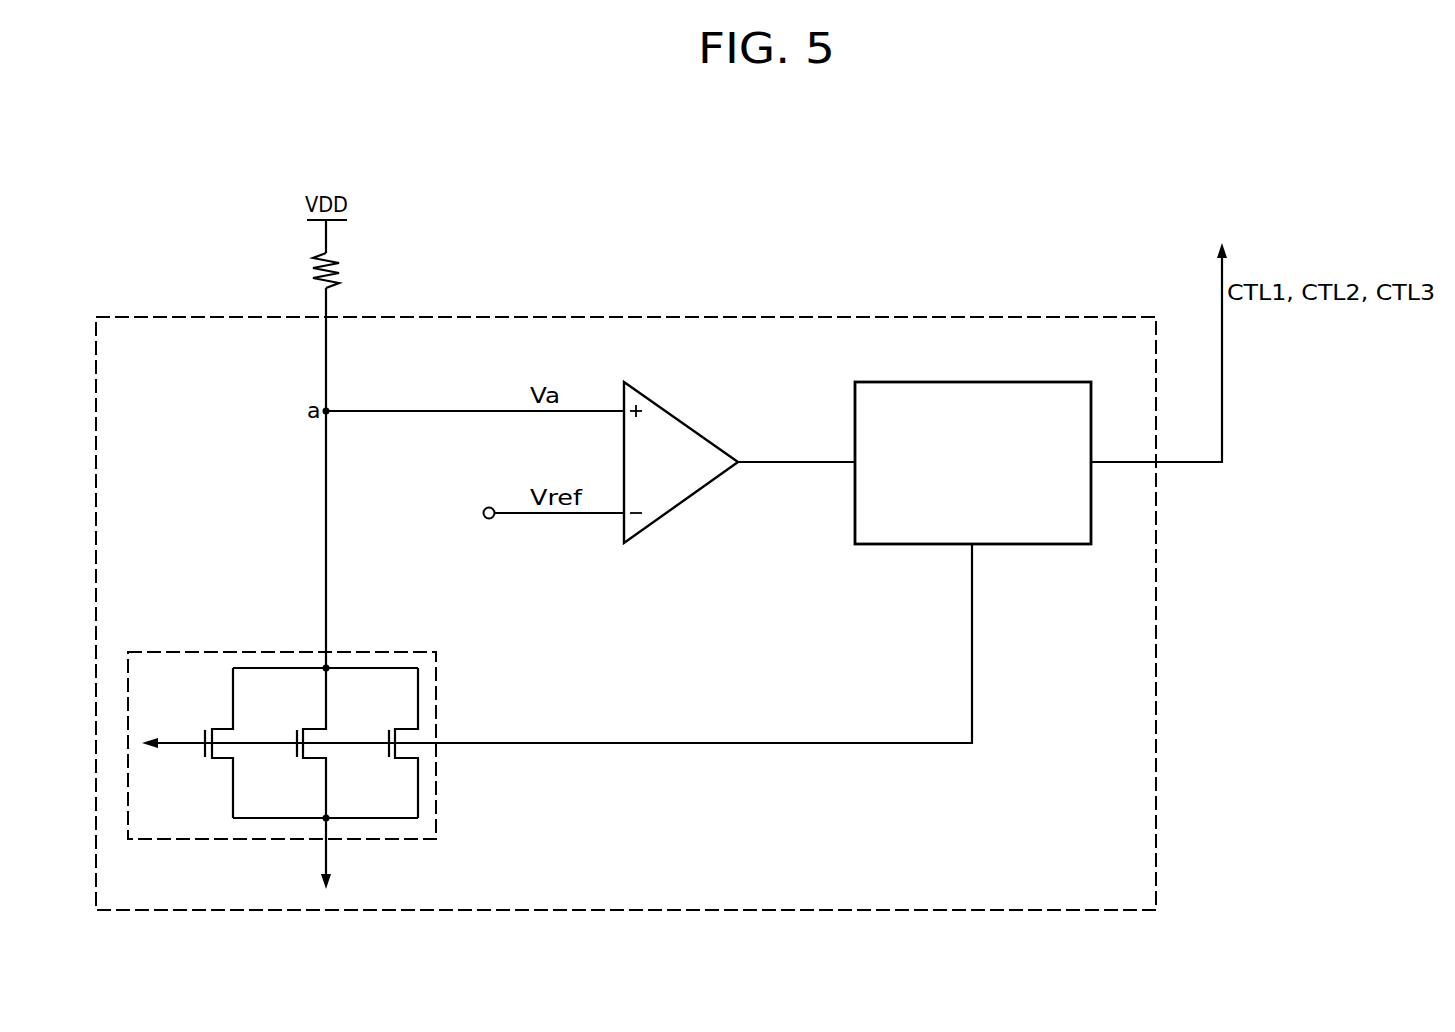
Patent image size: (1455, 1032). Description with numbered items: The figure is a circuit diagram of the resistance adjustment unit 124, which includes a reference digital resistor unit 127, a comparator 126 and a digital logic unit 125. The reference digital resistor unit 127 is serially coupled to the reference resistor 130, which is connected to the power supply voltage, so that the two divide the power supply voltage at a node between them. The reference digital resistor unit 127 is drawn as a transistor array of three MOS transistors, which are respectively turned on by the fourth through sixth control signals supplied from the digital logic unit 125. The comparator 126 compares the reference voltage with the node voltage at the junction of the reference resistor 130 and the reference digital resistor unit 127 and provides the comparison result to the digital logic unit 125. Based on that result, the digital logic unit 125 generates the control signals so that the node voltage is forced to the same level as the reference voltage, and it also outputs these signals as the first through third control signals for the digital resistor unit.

The reference resistor 130 is at (339, 272).
The resistance adjustment unit 124 is at (751, 316).
The comparator 126 is at (684, 421).
The digital logic unit 125 is at (1042, 545).
The reference digital resistor unit 127 is at (437, 675).